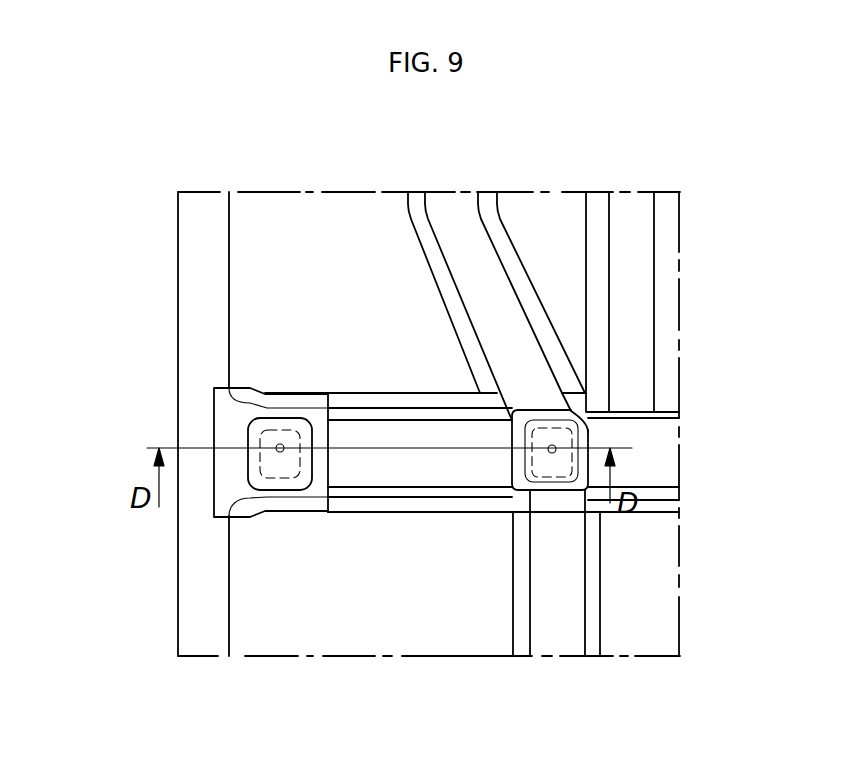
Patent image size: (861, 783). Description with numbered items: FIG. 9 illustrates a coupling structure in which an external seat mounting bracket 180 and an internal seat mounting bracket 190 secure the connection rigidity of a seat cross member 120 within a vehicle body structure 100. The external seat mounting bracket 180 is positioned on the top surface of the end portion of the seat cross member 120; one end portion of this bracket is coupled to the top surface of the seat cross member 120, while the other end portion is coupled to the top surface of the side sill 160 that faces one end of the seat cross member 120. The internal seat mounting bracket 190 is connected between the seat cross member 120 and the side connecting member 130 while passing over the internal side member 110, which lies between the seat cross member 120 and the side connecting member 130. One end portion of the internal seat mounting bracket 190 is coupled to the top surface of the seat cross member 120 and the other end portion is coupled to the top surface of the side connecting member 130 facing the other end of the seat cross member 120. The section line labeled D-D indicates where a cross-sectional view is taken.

The vehicle body frame 100 is at (317, 247).
The internal side member 110 is at (505, 318).
The seat cross member 120 is at (403, 468).
The side connecting member 130 is at (658, 452).
The side sill 160 is at (200, 312).
The external seat mounting bracket 180 is at (280, 467).
The internal seat mounting bracket 190 is at (546, 472).